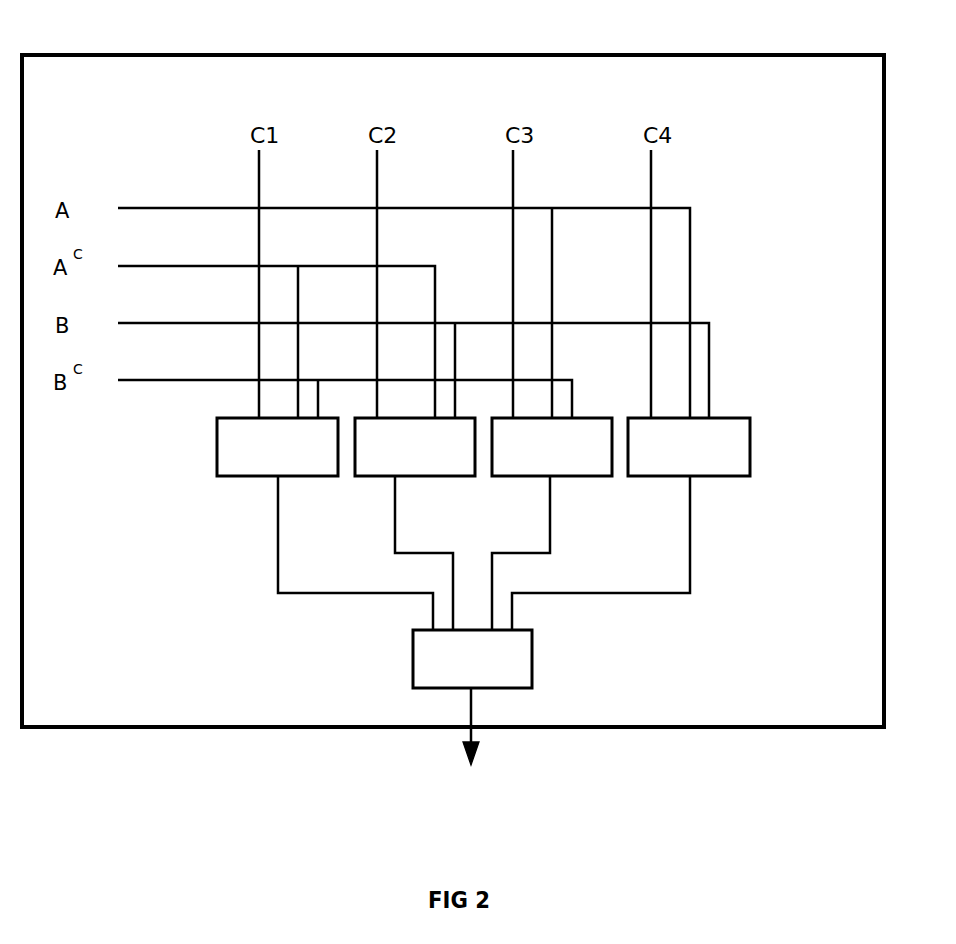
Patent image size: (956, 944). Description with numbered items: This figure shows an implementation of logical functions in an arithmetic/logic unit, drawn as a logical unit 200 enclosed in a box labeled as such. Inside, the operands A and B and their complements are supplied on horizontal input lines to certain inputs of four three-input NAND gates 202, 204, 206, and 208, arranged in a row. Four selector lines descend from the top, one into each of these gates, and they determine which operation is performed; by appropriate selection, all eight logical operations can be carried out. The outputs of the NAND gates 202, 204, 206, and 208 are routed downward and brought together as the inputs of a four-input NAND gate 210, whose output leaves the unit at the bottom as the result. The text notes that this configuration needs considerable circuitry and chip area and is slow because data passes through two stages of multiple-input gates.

The logical unit 200 is at (192, 53).
The three-input NAND gate 202 is at (247, 478).
The three-input NAND gate 204 is at (377, 478).
The three-input NAND gate 206 is at (518, 478).
The three-input NAND gate 208 is at (668, 478).
The 4-input NAND gate 210 is at (413, 669).